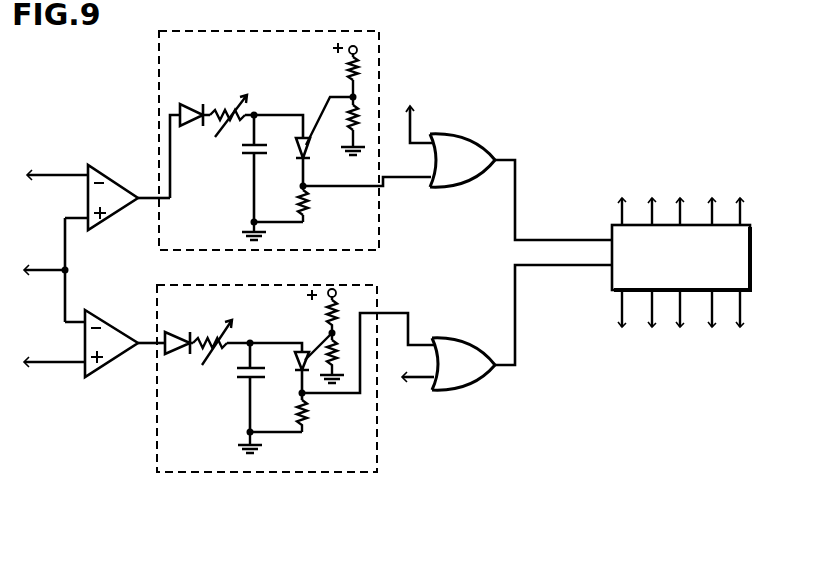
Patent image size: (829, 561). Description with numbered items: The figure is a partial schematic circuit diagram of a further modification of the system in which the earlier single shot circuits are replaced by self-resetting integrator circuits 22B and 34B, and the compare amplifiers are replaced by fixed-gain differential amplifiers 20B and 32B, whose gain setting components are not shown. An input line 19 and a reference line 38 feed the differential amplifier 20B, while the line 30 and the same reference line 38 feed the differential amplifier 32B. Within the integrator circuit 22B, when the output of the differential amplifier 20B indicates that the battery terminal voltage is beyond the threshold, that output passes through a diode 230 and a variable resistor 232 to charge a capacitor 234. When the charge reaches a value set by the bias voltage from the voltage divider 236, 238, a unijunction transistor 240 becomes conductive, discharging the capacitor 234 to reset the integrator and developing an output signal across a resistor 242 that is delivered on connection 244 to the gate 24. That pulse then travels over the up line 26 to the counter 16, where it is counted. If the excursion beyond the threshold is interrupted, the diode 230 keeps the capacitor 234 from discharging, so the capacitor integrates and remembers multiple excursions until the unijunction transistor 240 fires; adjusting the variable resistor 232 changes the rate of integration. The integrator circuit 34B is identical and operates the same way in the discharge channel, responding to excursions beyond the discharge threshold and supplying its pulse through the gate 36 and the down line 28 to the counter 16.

The first input signal line 19 is at (58, 174).
The fixed-gain differential amplifier 20B is at (133, 167).
The self-resetting integrator circuit 22B is at (248, 28).
The diode 230 is at (190, 110).
The variable resistor 232 is at (223, 112).
The capacitor 234 is at (247, 156).
The voltage divider 236 is at (349, 70).
The voltage divider 238 is at (356, 99).
The unijunction transistor 240 is at (308, 151).
The resistor 242 is at (339, 232).
The connection 244 is at (408, 179).
The gate 24 is at (498, 125).
The up count line 26 is at (516, 220).
The down count line 28 is at (518, 318).
The second input signal line 30 is at (40, 358).
The fixed-gain differential amplifier 32B is at (128, 300).
The self-resetting integrator circuit 34B is at (325, 478).
The OR gate 36 is at (477, 340).
The reference signal line 38 is at (40, 268).
The counter 16 is at (615, 280).